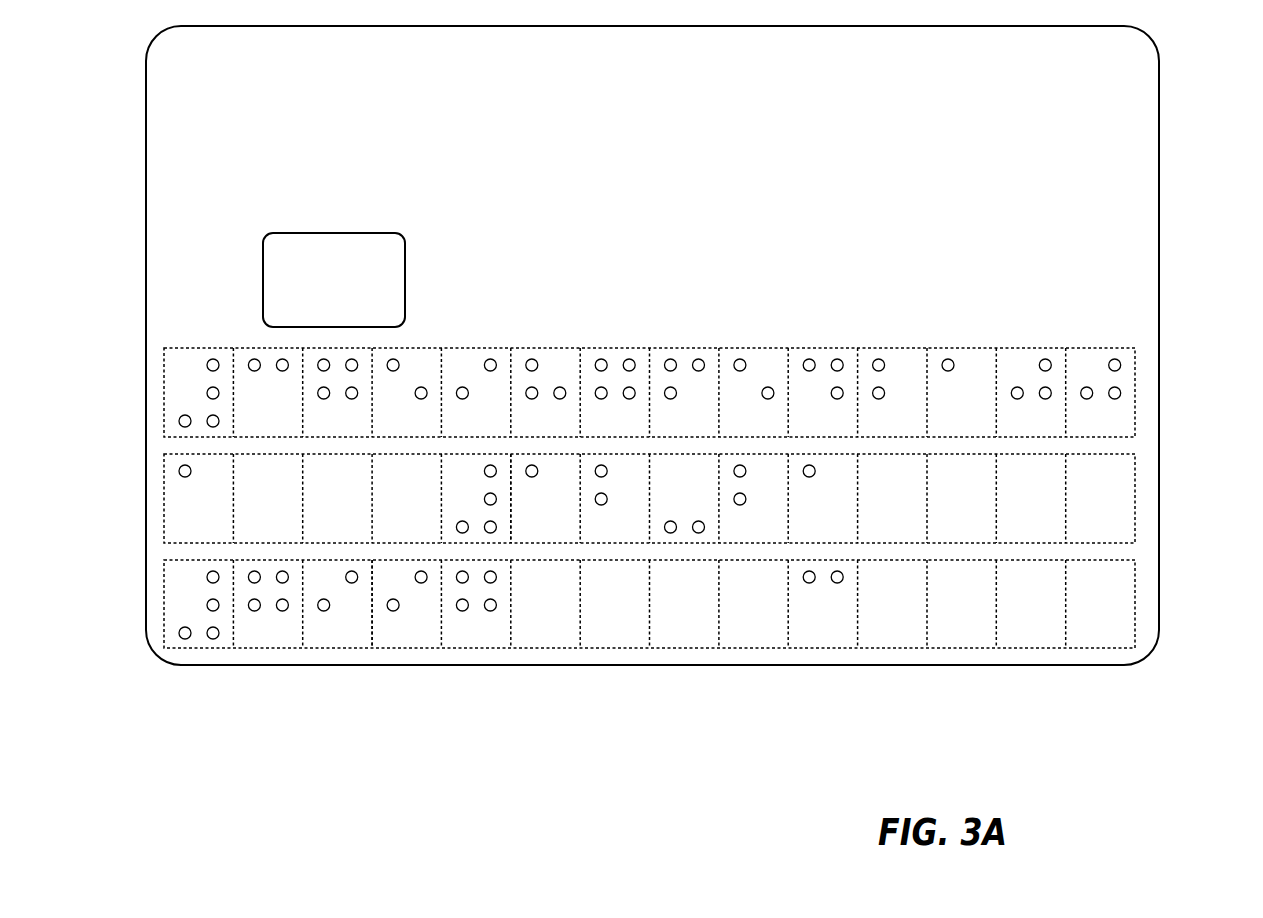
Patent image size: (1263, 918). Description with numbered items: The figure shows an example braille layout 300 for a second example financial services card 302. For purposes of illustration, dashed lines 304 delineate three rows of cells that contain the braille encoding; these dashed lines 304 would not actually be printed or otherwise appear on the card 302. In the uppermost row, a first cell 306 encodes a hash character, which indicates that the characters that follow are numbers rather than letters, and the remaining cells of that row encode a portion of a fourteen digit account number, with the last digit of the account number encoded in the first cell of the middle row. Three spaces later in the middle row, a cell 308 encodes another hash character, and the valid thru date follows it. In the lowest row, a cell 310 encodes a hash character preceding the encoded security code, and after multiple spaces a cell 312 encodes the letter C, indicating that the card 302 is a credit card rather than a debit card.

The braille layout 300 is at (1167, 351).
The financial services card 302 is at (146, 78).
The dashed lines 304 is at (368, 649).
The first cell 306 is at (175, 383).
The cell 308 is at (503, 535).
The cell 310 is at (596, 649).
The cell 312 is at (821, 630).